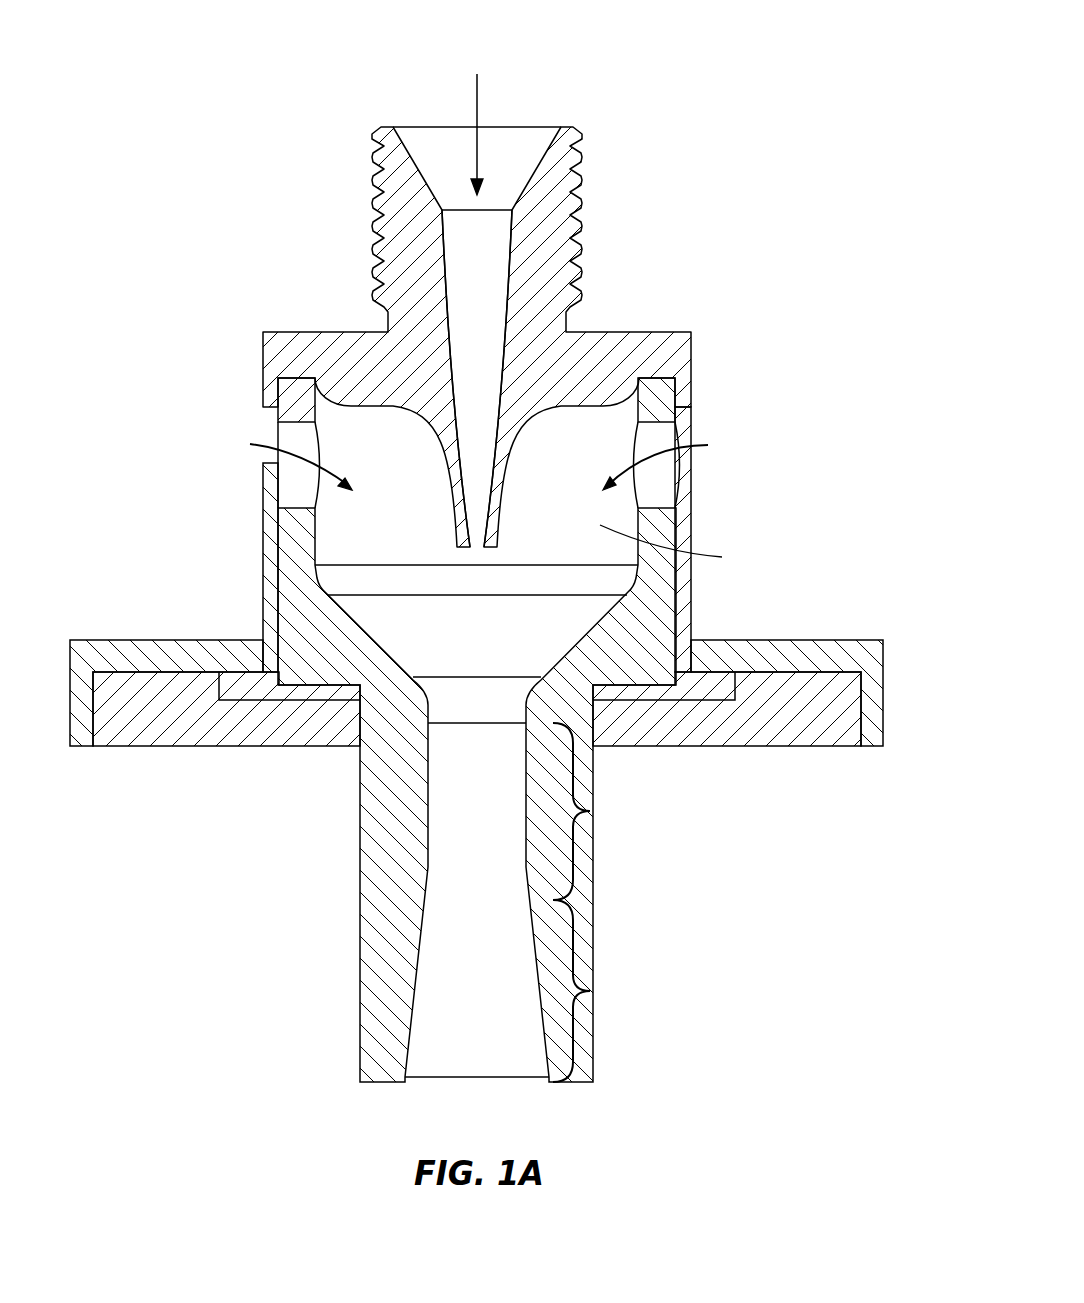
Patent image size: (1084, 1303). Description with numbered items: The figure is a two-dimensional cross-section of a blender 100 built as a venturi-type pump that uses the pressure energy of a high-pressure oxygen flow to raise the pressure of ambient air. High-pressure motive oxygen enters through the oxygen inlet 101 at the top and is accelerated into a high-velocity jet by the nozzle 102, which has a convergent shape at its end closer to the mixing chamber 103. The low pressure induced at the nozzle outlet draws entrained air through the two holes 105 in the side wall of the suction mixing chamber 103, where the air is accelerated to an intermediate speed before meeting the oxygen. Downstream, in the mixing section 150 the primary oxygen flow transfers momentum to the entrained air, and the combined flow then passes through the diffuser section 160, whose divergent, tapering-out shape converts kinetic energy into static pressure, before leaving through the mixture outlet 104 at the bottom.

The blender 100 is at (724, 220).
The oxygen inlet 101 is at (424, 146).
The nozzle 102 is at (467, 436).
The mixing chamber 103 is at (583, 465).
The mixture outlet 104 is at (432, 1066).
The holes 105 is at (290, 438).
The mixing section 150 is at (580, 843).
The diffuser section 160 is at (580, 1037).